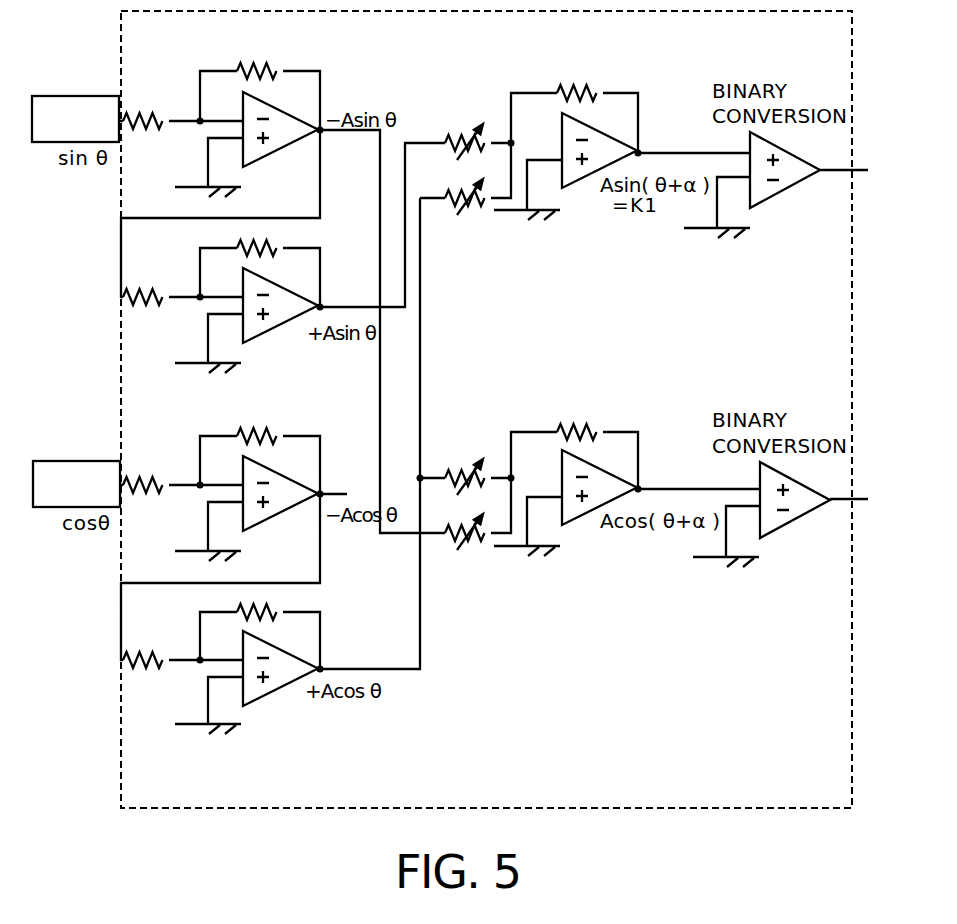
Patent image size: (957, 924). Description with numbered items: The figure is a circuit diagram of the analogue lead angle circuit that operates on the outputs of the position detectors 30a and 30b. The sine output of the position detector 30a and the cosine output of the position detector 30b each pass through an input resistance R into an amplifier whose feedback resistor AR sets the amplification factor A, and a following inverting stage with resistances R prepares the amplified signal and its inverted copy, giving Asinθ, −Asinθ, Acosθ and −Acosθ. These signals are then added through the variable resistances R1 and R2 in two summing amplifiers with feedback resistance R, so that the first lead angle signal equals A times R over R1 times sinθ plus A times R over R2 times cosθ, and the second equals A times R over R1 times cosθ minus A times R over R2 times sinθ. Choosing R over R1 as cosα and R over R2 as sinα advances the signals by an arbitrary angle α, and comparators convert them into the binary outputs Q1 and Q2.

The position detector 30a is at (75, 119).
The position detector 30b is at (76, 484).
The resistance R is at (360, 364).
The amplification resistor AR is at (257, 240).
The variable resistance R1 is at (467, 297).
The variable resistance R2 is at (465, 356).
The binary output Q1 is at (860, 171).
The binary output Q2 is at (865, 501).